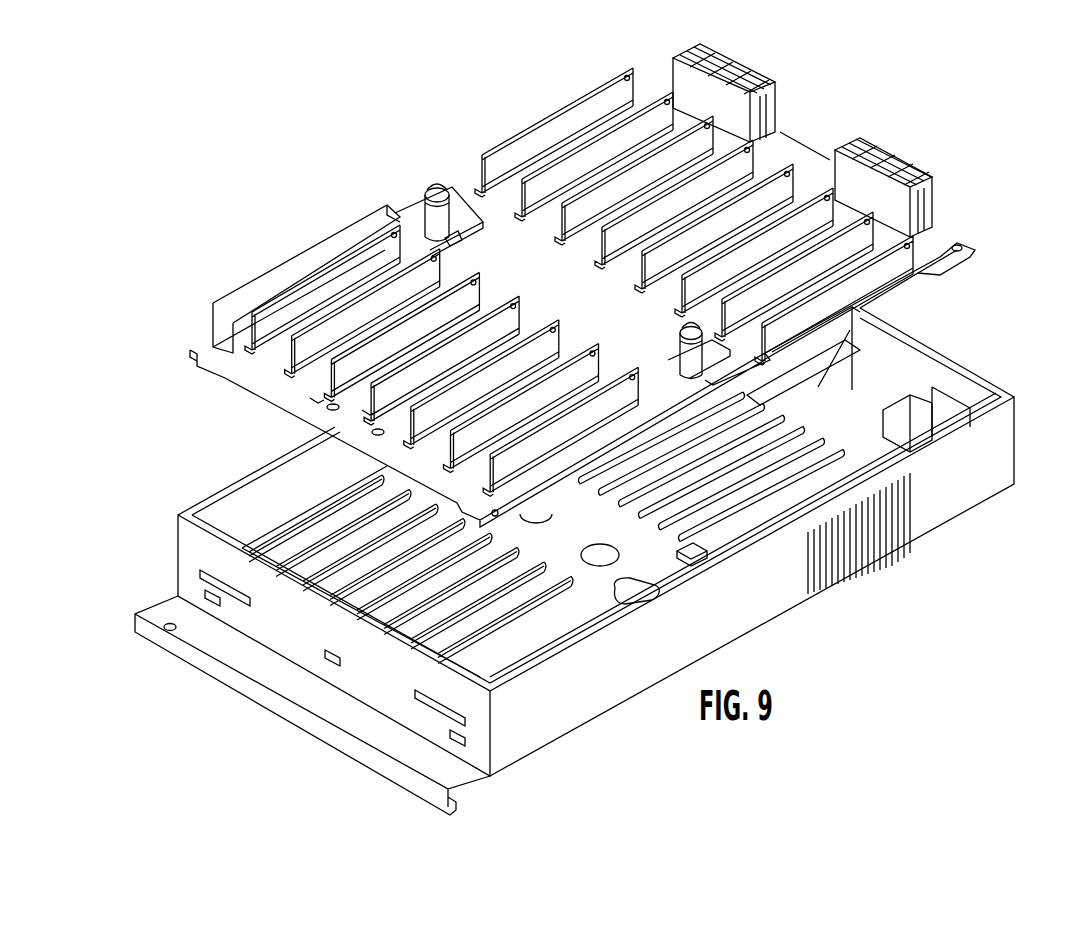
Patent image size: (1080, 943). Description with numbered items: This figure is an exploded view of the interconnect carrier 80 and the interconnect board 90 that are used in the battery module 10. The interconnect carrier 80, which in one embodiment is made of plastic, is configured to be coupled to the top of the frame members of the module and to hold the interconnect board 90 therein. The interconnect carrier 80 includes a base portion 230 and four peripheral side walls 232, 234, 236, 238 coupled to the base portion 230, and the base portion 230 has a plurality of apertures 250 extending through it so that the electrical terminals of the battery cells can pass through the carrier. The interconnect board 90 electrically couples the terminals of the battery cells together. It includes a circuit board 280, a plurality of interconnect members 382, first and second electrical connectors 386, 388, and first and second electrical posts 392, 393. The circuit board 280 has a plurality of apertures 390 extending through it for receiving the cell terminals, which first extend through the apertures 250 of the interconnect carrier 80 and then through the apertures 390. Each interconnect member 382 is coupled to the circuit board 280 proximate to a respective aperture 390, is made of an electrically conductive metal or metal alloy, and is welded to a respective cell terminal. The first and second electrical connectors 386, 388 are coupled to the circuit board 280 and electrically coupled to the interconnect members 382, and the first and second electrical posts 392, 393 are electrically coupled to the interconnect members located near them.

The battery module 10 is at (962, 98).
The interconnect carrier 80 is at (599, 549).
The interconnect board 90 is at (967, 240).
The base portion 230 is at (880, 413).
The peripheral side wall 232 is at (582, 708).
The peripheral side wall 234 is at (383, 690).
The peripheral side wall 236 is at (237, 495).
The peripheral side wall 238 is at (922, 360).
The apertures 250 is at (263, 547).
The circuit board 280 is at (463, 187).
The interconnect members 382 is at (720, 183).
The first electrical connector 386 is at (917, 160).
The second electrical connector 388 is at (750, 66).
The apertures 390 is at (370, 415).
The first electrical post 392 is at (428, 190).
The second electrical post 393 is at (680, 335).